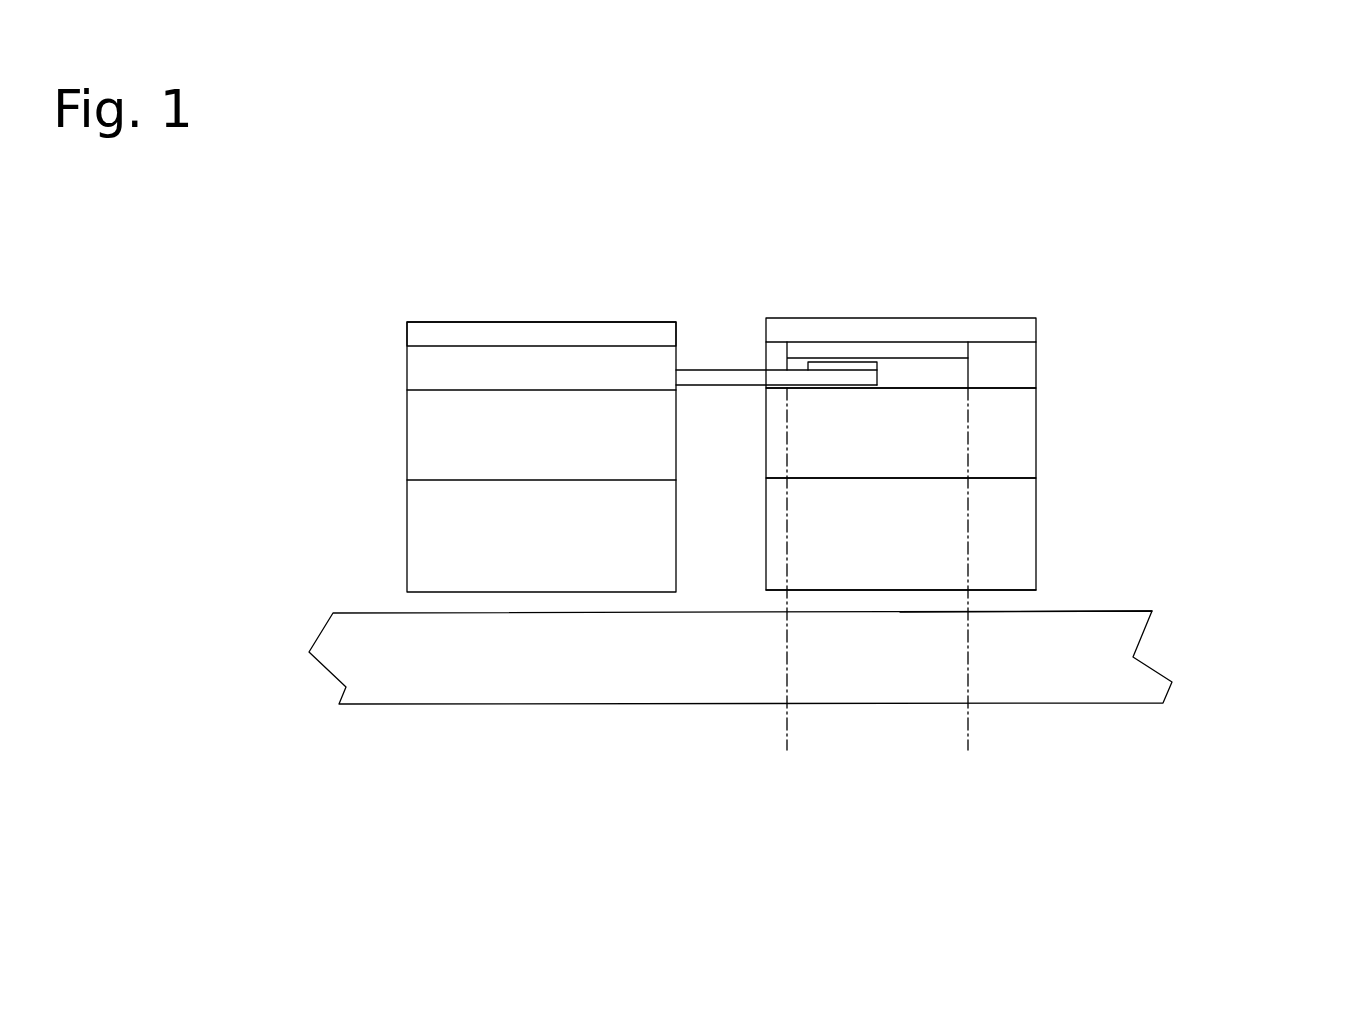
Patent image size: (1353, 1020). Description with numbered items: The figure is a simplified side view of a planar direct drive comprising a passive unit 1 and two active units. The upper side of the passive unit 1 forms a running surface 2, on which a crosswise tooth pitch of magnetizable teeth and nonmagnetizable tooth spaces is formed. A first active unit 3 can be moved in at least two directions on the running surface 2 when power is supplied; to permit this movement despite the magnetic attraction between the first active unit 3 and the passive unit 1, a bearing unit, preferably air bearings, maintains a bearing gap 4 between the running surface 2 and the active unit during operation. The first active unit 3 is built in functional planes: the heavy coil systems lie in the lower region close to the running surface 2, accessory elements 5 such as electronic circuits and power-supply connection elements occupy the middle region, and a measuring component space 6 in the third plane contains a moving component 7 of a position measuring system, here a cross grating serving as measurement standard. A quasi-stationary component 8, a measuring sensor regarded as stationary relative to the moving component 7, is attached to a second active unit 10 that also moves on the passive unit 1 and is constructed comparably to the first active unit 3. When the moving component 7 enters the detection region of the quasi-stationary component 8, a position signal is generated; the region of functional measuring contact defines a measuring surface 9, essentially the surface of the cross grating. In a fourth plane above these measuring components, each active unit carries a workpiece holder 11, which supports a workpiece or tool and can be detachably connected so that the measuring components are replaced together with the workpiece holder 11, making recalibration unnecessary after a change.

The passive unit 1 is at (1045, 675).
The running surface 2 is at (1123, 609).
The first active unit 3 is at (1010, 532).
The bearing gap 4 is at (1028, 600).
The accessory elements 5 is at (1000, 445).
The measuring component space 6 is at (1010, 380).
The moving component 7 is at (903, 352).
The quasi-stationary component 8 is at (835, 362).
The measuring surface 9 is at (785, 755).
The second active unit 10 is at (407, 535).
The workpiece holder 11 is at (439, 337).